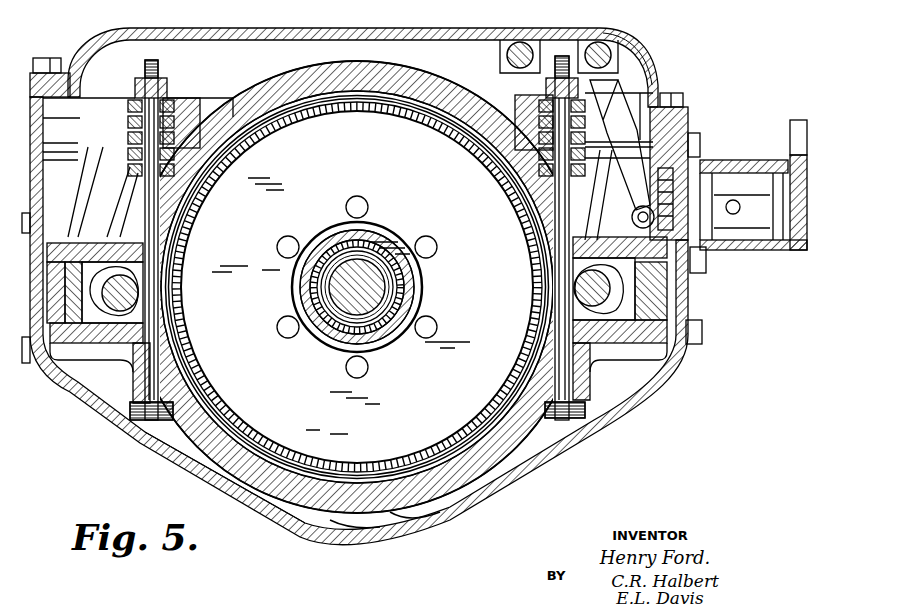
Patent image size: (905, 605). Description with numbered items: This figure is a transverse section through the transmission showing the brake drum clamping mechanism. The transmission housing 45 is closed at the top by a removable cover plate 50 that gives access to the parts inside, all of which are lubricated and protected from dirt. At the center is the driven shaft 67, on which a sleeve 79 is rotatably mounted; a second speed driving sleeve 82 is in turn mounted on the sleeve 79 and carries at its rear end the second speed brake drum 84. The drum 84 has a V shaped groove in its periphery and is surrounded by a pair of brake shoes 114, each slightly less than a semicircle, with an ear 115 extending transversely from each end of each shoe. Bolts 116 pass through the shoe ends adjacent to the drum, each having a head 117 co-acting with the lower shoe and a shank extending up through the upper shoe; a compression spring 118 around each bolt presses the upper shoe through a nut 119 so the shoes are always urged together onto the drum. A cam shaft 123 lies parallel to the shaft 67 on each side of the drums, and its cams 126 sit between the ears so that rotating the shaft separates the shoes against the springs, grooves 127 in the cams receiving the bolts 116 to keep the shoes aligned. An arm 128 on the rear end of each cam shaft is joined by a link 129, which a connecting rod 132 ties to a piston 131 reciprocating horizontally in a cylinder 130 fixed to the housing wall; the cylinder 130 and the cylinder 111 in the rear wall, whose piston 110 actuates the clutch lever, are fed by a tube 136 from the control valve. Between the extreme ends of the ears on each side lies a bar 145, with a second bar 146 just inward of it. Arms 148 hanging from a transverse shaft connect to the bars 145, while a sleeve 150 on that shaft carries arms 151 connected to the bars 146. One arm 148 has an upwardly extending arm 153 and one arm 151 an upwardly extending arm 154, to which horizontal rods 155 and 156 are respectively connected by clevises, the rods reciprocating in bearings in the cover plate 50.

The transmission housing 45 is at (348, 477).
The removable cover plate 50 is at (238, 30).
The driven shaft 67 is at (378, 290).
The sleeve 79 is at (390, 292).
The second speed driving sleeve 82 is at (374, 312).
The second speed brake drum 84 is at (368, 477).
The piston 110 is at (358, 536).
The cylinder 111 is at (415, 525).
The brake shoes 114 is at (282, 92).
The ear 115 is at (100, 165).
The bolts 116 is at (132, 350).
The head 117 is at (142, 421).
The compression spring 118 is at (174, 128).
The nut 119 is at (137, 88).
The cam shafts 123 is at (128, 294).
The cams 126 is at (130, 270).
The grooves 127 is at (130, 304).
The arm 128 is at (668, 243).
The link 129 is at (632, 214).
The cylinder 130 is at (765, 250).
The piston 131 is at (742, 202).
The connecting rod 132 is at (710, 200).
The tube 136 is at (792, 125).
The bar 145 is at (662, 300).
The bars 146 is at (665, 365).
The arms 148 is at (688, 130).
The sleeve 150 is at (545, 112).
The arms 151 is at (608, 205).
The upwardly extending arm 153 is at (612, 97).
The upwardly extending arm 154 is at (553, 95).
The rod 155 is at (625, 45).
The rod 156 is at (521, 42).